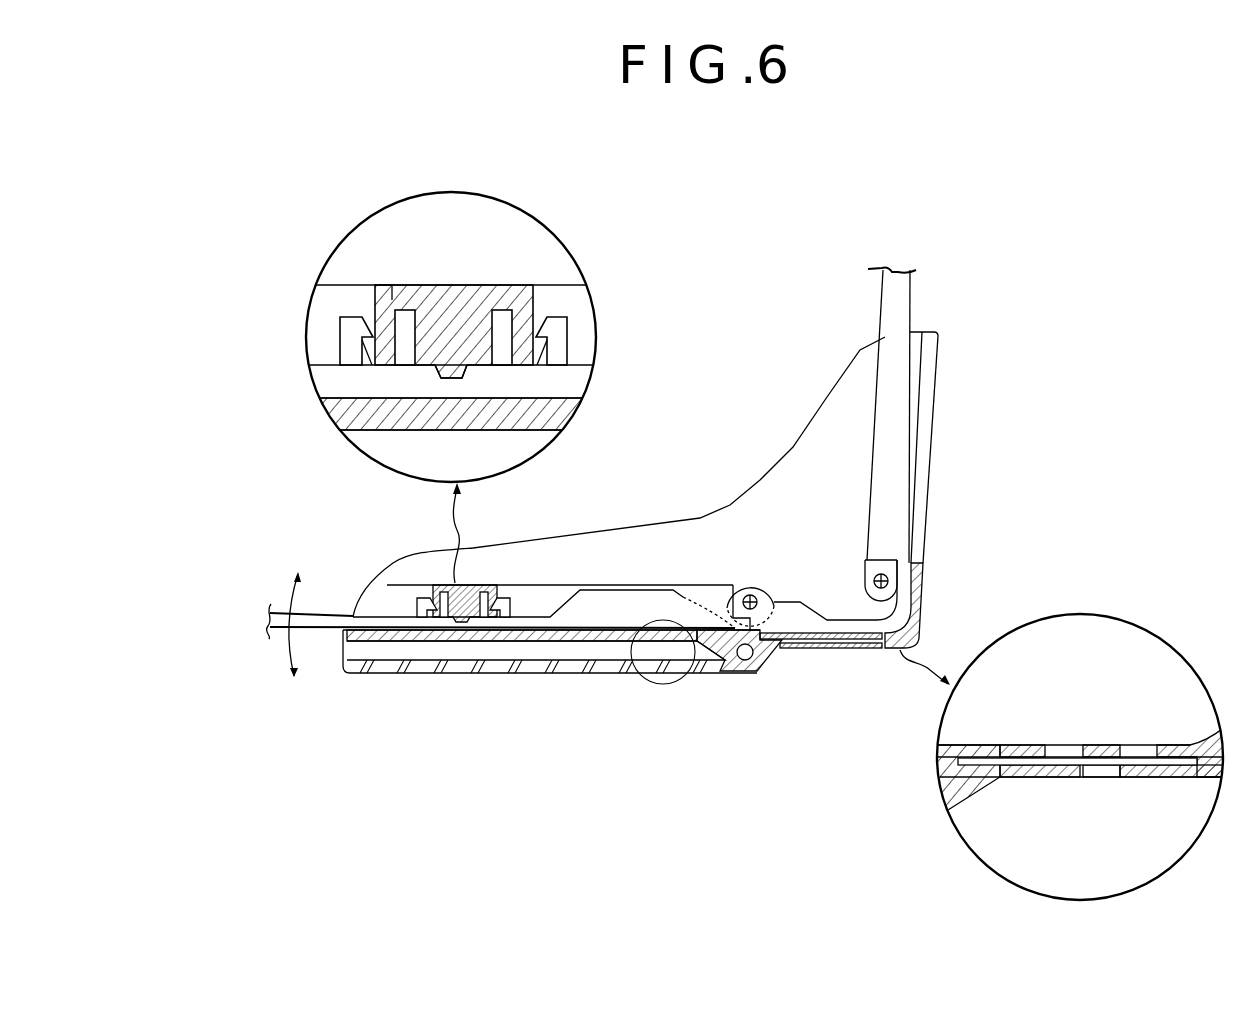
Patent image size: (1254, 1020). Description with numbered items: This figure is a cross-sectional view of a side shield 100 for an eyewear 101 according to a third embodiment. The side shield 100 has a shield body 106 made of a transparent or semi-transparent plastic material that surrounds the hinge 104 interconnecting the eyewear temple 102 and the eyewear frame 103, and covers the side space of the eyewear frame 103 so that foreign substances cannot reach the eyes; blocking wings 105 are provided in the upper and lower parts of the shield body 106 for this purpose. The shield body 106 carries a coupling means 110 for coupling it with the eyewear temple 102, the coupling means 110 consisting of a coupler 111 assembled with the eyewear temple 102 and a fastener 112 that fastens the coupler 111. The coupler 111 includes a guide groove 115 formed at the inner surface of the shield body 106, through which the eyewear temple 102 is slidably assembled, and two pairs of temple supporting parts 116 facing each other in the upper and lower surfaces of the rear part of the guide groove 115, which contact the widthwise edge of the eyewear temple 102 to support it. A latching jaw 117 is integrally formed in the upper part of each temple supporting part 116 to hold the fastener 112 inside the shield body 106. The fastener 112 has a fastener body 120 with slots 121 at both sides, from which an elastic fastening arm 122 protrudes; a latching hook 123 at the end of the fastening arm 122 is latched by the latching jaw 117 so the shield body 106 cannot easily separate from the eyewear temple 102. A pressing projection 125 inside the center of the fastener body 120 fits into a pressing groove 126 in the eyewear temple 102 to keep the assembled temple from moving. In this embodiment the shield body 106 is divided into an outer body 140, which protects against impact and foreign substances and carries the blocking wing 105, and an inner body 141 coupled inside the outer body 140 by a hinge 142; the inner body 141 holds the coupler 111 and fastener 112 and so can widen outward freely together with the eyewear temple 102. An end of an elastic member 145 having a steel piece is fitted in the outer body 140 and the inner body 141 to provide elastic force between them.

The side shield 100 is at (598, 519).
The eyewear 101 is at (868, 318).
The eyewear temple 102 is at (268, 622).
The eyewear frame 103 is at (903, 306).
The hinge 104 is at (750, 595).
The blocking wings 105 is at (812, 462).
The shield body 106 is at (690, 515).
The coupling means 110 is at (418, 344).
The coupler 111 is at (418, 339).
The fastener 112 is at (450, 288).
The guide groove 115 is at (345, 385).
The temple supporting parts 116 is at (345, 320).
The latching jaw 117 is at (345, 333).
The fastener body 120 is at (460, 290).
The slots 121 is at (410, 310).
The fastening arm 122 is at (378, 290).
The latching hook 123 is at (555, 350).
The pressing projection 125 is at (497, 310).
The pressing groove 126 is at (440, 380).
The outer body 140 is at (620, 677).
The inner body 141 is at (565, 650).
The hinge 142 is at (745, 661).
The elastic member 145 is at (833, 650).